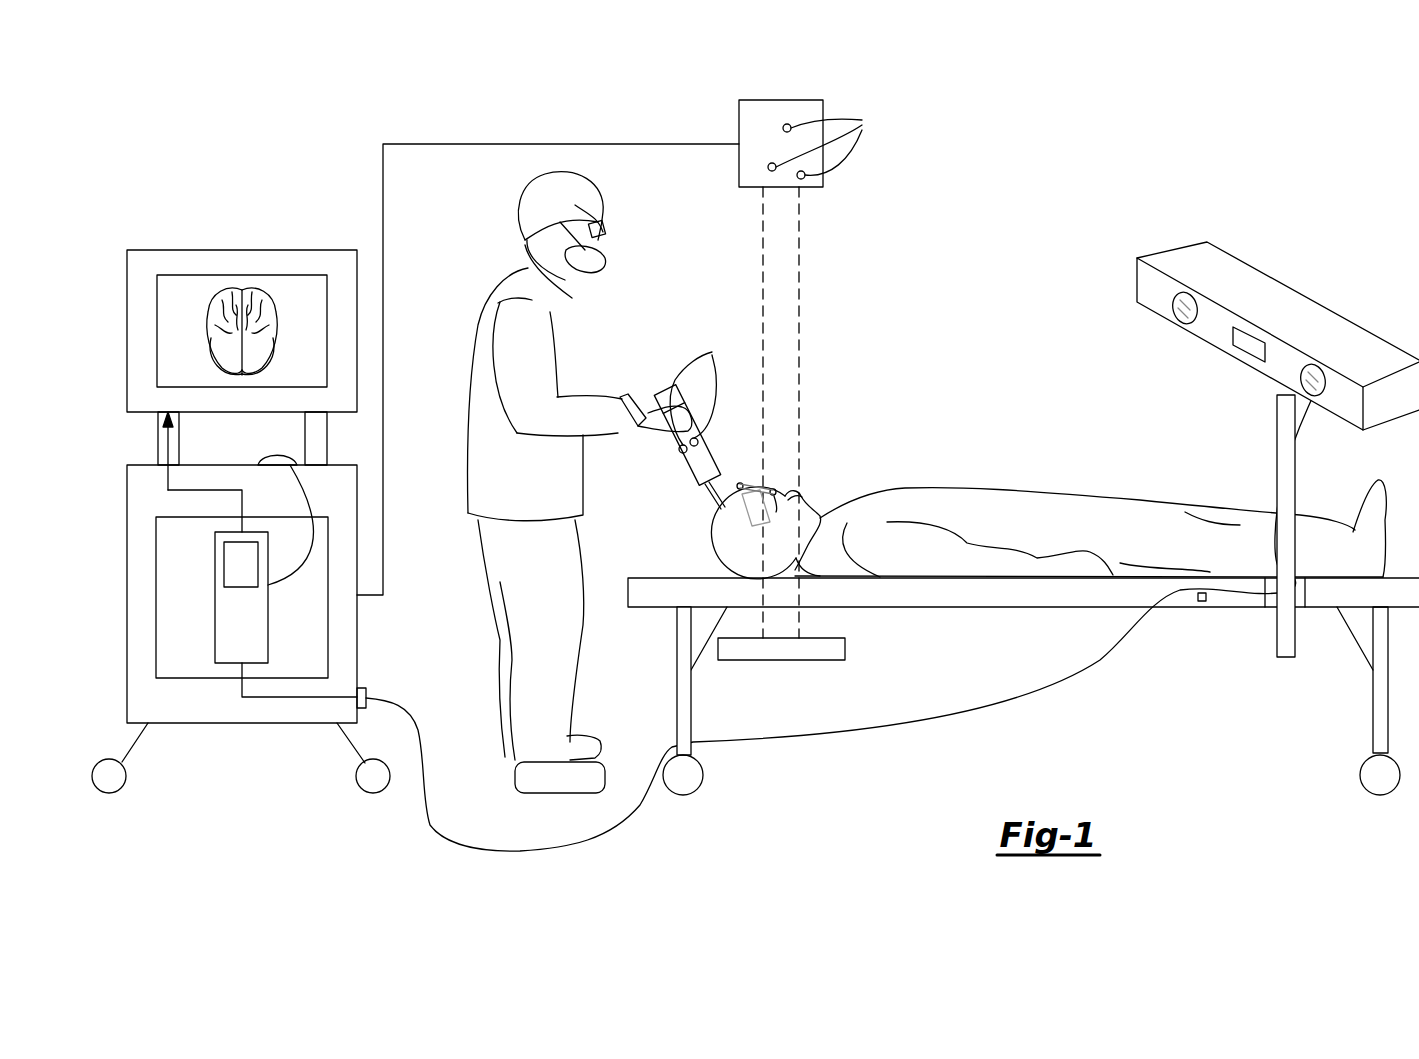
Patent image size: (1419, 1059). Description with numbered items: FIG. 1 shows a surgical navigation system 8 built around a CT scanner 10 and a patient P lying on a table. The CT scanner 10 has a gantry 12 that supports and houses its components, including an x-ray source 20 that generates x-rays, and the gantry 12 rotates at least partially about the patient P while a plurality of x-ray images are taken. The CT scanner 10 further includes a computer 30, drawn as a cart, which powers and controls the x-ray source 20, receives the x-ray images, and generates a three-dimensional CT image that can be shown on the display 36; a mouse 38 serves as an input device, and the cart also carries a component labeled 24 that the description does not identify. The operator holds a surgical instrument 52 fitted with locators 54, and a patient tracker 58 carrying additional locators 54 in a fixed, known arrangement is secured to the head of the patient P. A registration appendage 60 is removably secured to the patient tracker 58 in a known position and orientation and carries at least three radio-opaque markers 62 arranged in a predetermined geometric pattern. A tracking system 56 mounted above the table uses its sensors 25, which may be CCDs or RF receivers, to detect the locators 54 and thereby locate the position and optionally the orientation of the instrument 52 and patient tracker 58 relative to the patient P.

The surgical navigation system 8 is at (1322, 165).
The CT scanner 10 is at (744, 77).
The gantry 12 is at (762, 236).
The x-ray source 20 is at (792, 100).
The processing module 24 is at (228, 638).
The sensors 25 is at (1182, 322).
The computer 30 is at (182, 188).
The display 36 is at (308, 250).
The mouse 38 is at (276, 452).
The surgical instrument 52 is at (655, 385).
The locators 54 is at (740, 483).
The tracking system 56 is at (1277, 449).
The patient tracker 58 is at (718, 516).
The registration appendage 60 is at (774, 490).
The radio-opaque markers 62 is at (792, 497).
The patient P is at (900, 486).